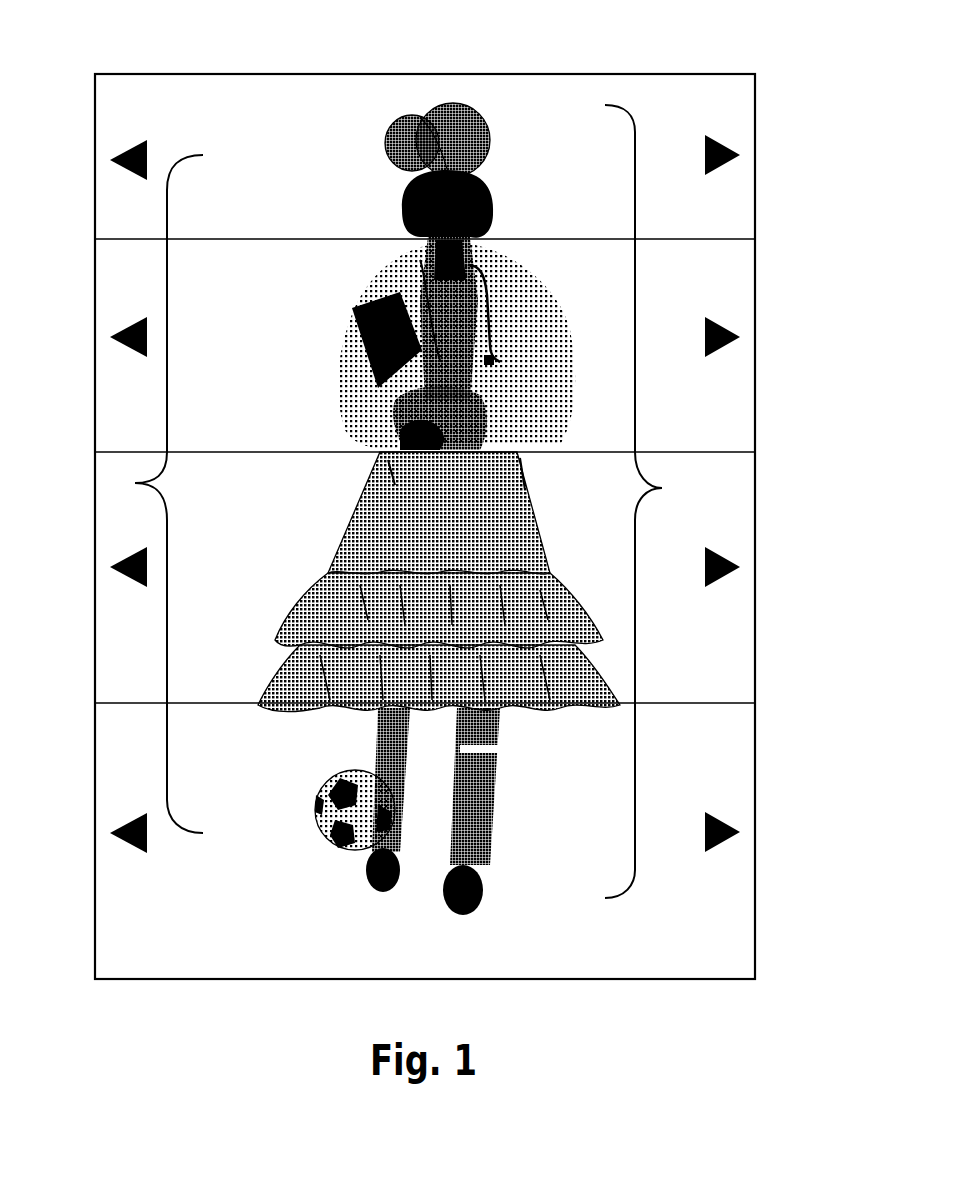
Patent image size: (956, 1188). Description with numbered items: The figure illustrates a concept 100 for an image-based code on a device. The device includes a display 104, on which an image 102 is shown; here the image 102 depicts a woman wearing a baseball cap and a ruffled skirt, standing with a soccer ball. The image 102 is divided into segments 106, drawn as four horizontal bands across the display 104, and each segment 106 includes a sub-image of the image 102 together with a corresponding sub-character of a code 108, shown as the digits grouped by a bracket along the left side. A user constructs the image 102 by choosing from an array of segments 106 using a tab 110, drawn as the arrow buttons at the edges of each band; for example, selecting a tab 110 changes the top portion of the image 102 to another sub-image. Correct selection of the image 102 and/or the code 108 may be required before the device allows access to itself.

The concept 100 is at (362, 26).
The image 102 is at (662, 488).
The display 104 is at (97, 73).
The segments 106 is at (95, 166).
The code 108 is at (135, 483).
The tab 110 is at (722, 146).